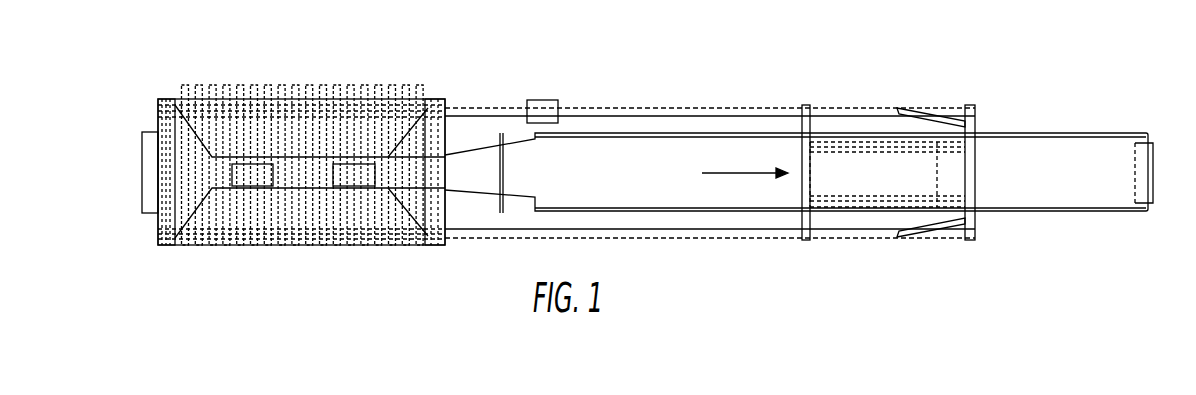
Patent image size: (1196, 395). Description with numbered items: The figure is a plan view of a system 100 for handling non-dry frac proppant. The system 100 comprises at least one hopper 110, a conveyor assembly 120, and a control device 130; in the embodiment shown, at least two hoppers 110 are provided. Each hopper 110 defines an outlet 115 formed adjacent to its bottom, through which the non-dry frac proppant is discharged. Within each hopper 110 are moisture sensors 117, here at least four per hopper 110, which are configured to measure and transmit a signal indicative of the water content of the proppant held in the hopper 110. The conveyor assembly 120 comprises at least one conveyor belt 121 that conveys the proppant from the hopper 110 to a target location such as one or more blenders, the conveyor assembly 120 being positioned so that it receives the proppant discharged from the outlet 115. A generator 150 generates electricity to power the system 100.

The system 100 is at (621, 91).
The hopper 110 is at (173, 120).
The outlet 115 is at (233, 172).
The moisture sensor 117 is at (268, 131).
The conveyor assembly 120 is at (718, 135).
The conveyor belt 121 is at (637, 190).
The control device 130 is at (385, 238).
The generator 150 is at (141, 165).